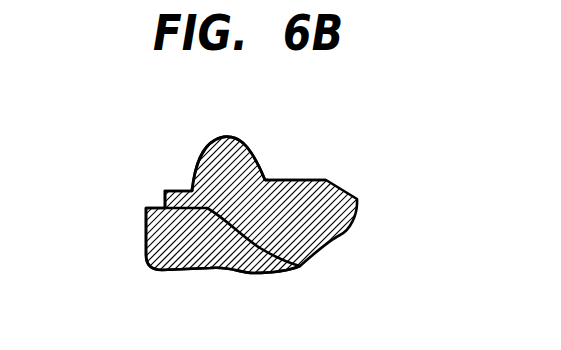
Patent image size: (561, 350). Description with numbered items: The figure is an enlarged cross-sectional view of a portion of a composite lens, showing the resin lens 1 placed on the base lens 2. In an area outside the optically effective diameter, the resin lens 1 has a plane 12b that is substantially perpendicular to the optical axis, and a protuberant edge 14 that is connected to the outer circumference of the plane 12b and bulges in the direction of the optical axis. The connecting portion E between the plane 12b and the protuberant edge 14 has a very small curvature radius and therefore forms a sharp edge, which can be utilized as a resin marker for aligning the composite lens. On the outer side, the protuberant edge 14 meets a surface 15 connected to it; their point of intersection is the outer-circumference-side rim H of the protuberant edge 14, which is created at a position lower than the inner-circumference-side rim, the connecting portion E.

The resin lens 1 is at (340, 212).
The base lens 2 is at (222, 256).
The protuberant edge 14 is at (228, 150).
The surface connected to the protuberant edge 15 is at (165, 191).
The plane 12b is at (326, 180).
The outer-circumference-side rim H is at (184, 182).
The connecting portion E is at (269, 193).